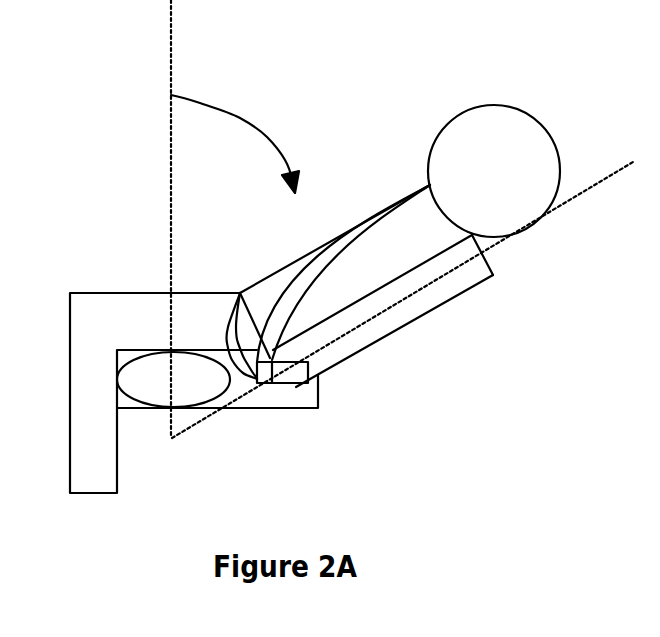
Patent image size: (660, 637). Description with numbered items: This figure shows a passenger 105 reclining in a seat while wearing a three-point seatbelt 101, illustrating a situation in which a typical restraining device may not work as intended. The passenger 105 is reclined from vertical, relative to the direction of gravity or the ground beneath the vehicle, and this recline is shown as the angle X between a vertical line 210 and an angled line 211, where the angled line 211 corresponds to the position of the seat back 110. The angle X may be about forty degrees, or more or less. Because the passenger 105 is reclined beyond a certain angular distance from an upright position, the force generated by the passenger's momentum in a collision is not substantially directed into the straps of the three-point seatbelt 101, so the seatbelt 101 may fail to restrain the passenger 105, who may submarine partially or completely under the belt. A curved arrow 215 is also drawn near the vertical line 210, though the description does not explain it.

The three-point seatbelt 101 is at (315, 377).
The angle X is at (214, 372).
The seat back 110 is at (360, 353).
The passenger 105 is at (390, 258).
The vertical line 210 is at (169, 78).
The rotation direction 215 is at (243, 118).
The angled line 211 is at (633, 162).